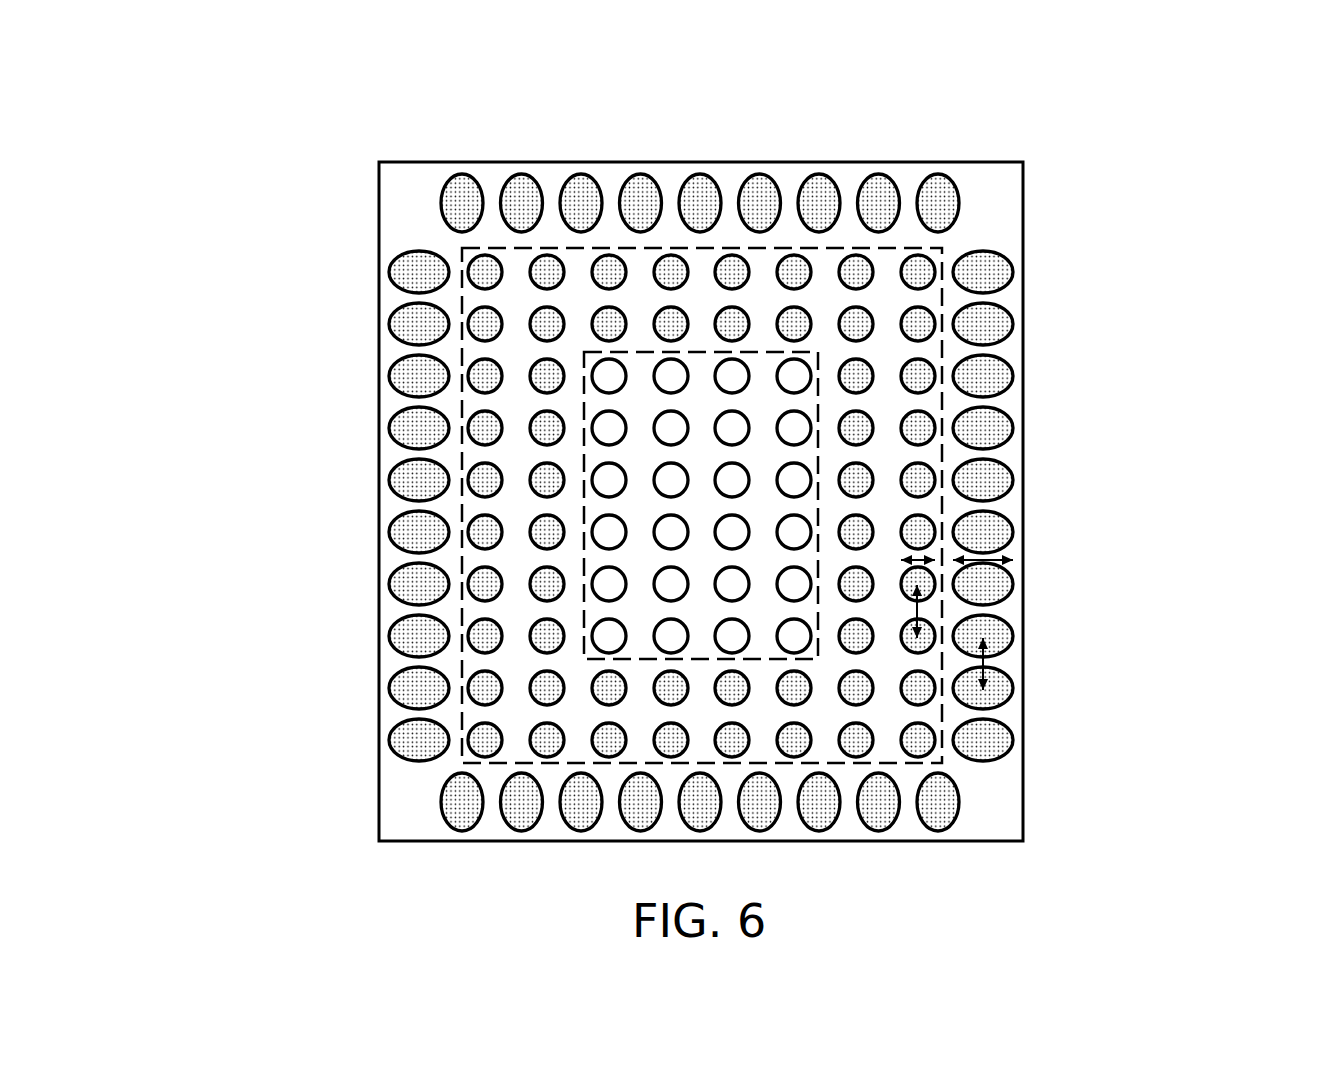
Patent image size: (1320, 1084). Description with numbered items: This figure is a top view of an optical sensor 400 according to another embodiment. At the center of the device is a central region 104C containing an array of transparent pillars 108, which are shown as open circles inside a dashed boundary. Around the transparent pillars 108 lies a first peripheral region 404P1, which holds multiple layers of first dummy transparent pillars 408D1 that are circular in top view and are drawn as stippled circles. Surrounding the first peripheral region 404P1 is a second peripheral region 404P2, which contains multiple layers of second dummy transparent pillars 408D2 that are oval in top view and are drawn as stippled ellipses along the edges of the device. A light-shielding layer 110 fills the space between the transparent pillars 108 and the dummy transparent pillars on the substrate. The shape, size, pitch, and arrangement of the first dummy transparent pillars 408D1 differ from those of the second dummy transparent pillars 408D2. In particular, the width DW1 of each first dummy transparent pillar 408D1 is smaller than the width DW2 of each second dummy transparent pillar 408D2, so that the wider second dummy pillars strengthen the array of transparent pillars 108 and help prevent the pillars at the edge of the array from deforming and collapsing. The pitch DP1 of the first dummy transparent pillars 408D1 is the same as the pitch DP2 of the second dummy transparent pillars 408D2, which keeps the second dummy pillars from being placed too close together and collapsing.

The optical sensor 400 is at (332, 146).
The light-shielding layer 110 is at (1016, 831).
The transparent pillars 108 is at (608, 427).
The central region 104C is at (613, 555).
The first peripheral region 404P1 is at (704, 494).
The second peripheral region 404P2 is at (704, 502).
The first dummy transparent pillars 408D1 is at (857, 323).
The second dummy transparent pillars 408D2 is at (993, 328).
The width of each first dummy transparent pillar DW1 is at (915, 560).
The width of each second dummy transparent pillar DW2 is at (983, 560).
The pitch of the first dummy transparent pillars DP1 is at (917, 607).
The pitch of the second dummy transparent pillars DP2 is at (983, 664).